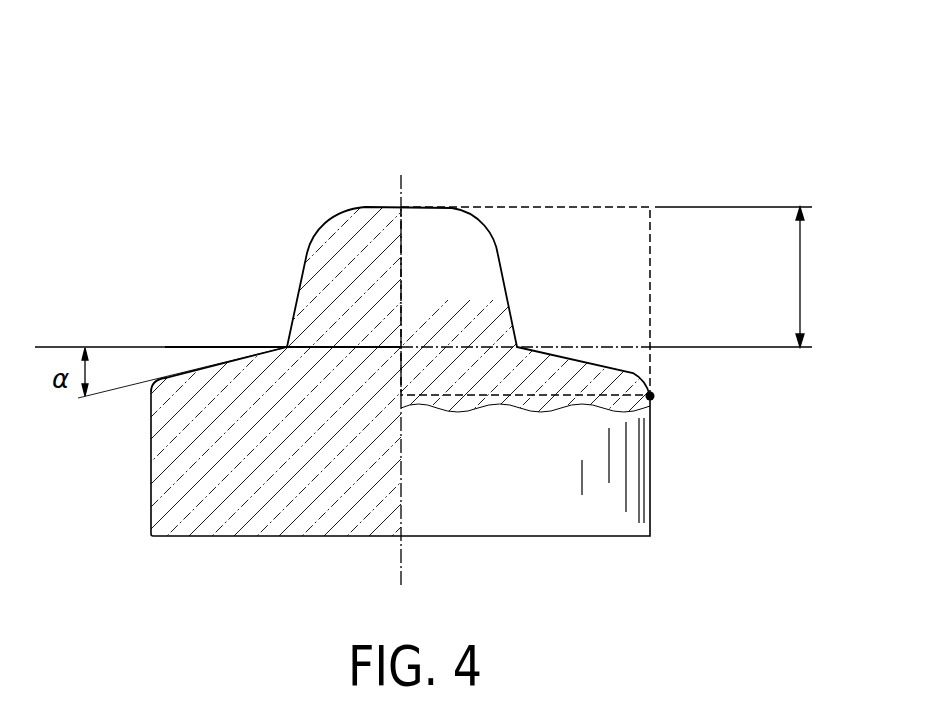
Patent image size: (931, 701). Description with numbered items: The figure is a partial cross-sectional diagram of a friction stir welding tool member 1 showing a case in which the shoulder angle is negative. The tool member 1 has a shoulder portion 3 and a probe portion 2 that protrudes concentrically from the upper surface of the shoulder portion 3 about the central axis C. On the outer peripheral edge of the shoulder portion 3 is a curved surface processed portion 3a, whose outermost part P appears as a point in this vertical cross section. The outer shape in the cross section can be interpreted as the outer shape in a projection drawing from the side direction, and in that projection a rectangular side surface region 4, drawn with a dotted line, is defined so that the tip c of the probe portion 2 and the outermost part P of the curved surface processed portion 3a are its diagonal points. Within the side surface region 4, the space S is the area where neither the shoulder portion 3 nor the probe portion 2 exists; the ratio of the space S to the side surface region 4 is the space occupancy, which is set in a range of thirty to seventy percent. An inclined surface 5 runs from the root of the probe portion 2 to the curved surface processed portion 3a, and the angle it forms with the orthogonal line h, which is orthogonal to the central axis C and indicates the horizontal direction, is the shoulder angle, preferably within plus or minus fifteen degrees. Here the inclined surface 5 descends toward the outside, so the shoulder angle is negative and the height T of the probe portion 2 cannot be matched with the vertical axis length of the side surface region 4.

The friction stir welding tool member 1 is at (194, 132).
The probe portion 2 is at (472, 213).
The shoulder portion 3 is at (618, 370).
The curved surface processed portion 3a is at (651, 394).
The side surface region 4 is at (610, 207).
The inclined surface 5 is at (220, 362).
The space S is at (548, 257).
The outermost part of the curved surface processed portion P is at (654, 399).
The height of the probe portion T is at (733, 277).
The central axis C is at (401, 393).
The tip of the probe portion c is at (401, 207).
The orthogonal line h is at (412, 348).